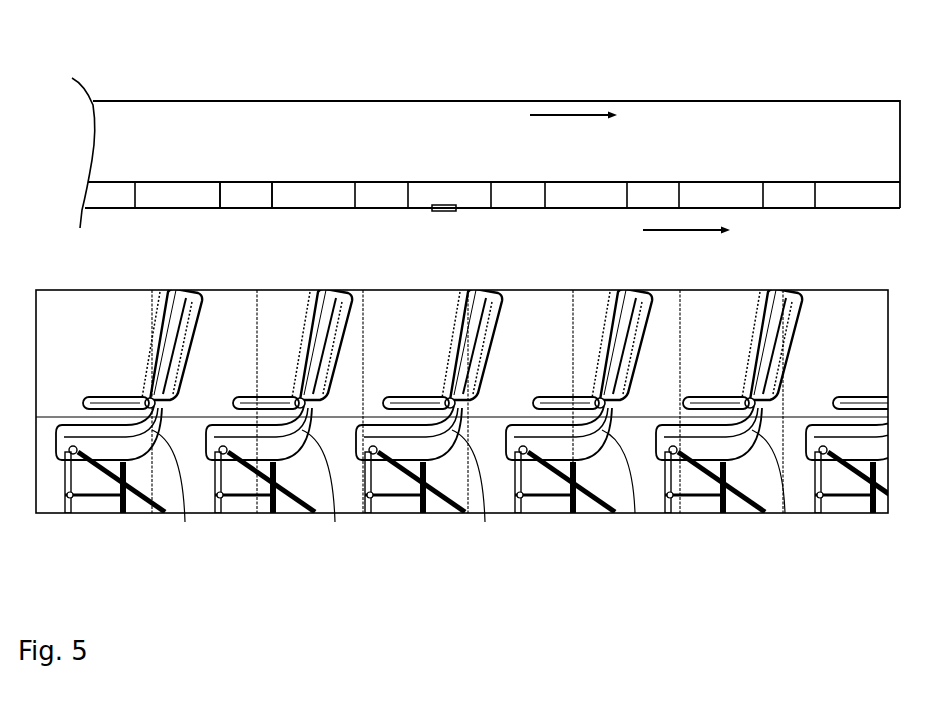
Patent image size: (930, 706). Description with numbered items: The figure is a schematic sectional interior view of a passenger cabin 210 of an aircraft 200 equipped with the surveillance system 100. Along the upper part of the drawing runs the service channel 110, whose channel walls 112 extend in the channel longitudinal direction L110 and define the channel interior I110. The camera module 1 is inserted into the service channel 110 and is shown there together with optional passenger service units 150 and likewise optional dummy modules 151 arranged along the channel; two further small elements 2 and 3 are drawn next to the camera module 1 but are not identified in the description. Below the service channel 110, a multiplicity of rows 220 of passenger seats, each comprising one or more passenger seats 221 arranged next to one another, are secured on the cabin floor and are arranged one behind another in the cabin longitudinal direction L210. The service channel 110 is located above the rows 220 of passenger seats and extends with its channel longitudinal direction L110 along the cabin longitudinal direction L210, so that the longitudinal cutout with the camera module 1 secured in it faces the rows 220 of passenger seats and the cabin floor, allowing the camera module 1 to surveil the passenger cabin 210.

The camera module 1 is at (443, 168).
The sensor 2 is at (468, 237).
The marker 3 is at (422, 222).
The surveillance system 100 is at (496, 106).
The service channel 110 is at (492, 144).
The channel walls 112 is at (768, 118).
The passenger service units 150 is at (328, 192).
The dummy modules 151 is at (253, 202).
The aircraft 200 is at (486, 145).
The passenger cabin 210 is at (450, 256).
The rows of passenger seats 220 is at (483, 457).
The passenger seats 221 is at (468, 491).
The channel longitudinal direction L110 is at (547, 116).
The cabin longitudinal direction L210 is at (660, 232).
The channel interior I110 is at (760, 157).